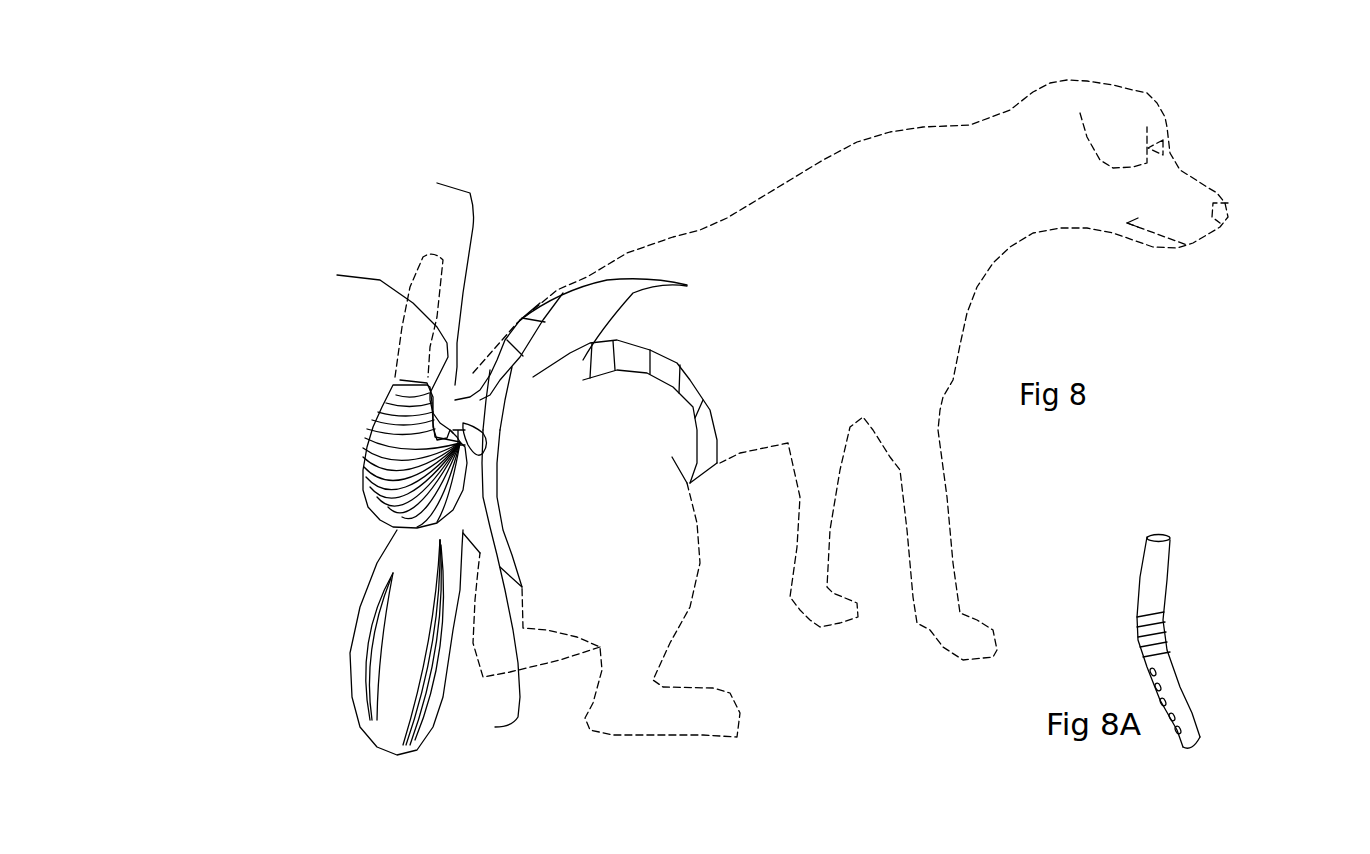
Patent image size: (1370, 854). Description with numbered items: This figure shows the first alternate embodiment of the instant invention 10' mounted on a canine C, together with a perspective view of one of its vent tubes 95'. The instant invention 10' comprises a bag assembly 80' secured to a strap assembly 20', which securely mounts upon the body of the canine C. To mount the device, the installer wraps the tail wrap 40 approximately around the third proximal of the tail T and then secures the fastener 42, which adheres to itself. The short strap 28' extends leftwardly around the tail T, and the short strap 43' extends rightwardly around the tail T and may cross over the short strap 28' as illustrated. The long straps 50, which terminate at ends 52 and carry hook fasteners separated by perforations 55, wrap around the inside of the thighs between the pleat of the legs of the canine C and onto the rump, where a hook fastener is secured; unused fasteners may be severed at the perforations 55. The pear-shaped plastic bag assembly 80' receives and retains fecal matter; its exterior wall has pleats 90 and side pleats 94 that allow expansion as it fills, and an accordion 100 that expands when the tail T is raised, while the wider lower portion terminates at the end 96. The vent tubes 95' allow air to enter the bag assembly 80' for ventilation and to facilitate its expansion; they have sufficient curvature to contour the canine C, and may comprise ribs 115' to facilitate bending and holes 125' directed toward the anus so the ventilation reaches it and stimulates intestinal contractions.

In FIG. 8, the instant invention 10' is at (276, 488).
In FIG. 8, the strap assembly 20' is at (845, 408).
In FIG. 8, the short strap 28' is at (435, 278).
In FIG. 8, the tail wrap 40 is at (403, 387).
In FIG. 8, the fastener 42 is at (381, 353).
In FIG. 8, the short strap 43' is at (555, 428).
In FIG. 8, the long straps 50 is at (543, 317).
In FIG. 8, the ends 52 is at (497, 363).
In FIG. 8, the perforations 55 is at (589, 337).
In FIG. 8, the bag assembly 80' is at (324, 642).
In FIG. 8, the pleats 90 is at (370, 663).
In FIG. 8, the side pleats 94 is at (423, 697).
In FIG. 8, the vent tubes 95' is at (558, 565).
In FIG. 8A, the vent tubes 95' is at (1204, 609).
In FIG. 8, the end 96 is at (390, 757).
In FIG. 8, the accordion 100 is at (365, 460).
In FIG. 8A, the ribs 115' is at (1212, 608).
In FIG. 8A, the holes 125' is at (1227, 684).
In FIG. 8, the canine C is at (735, 187).
In FIG. 8, the tail T is at (412, 263).